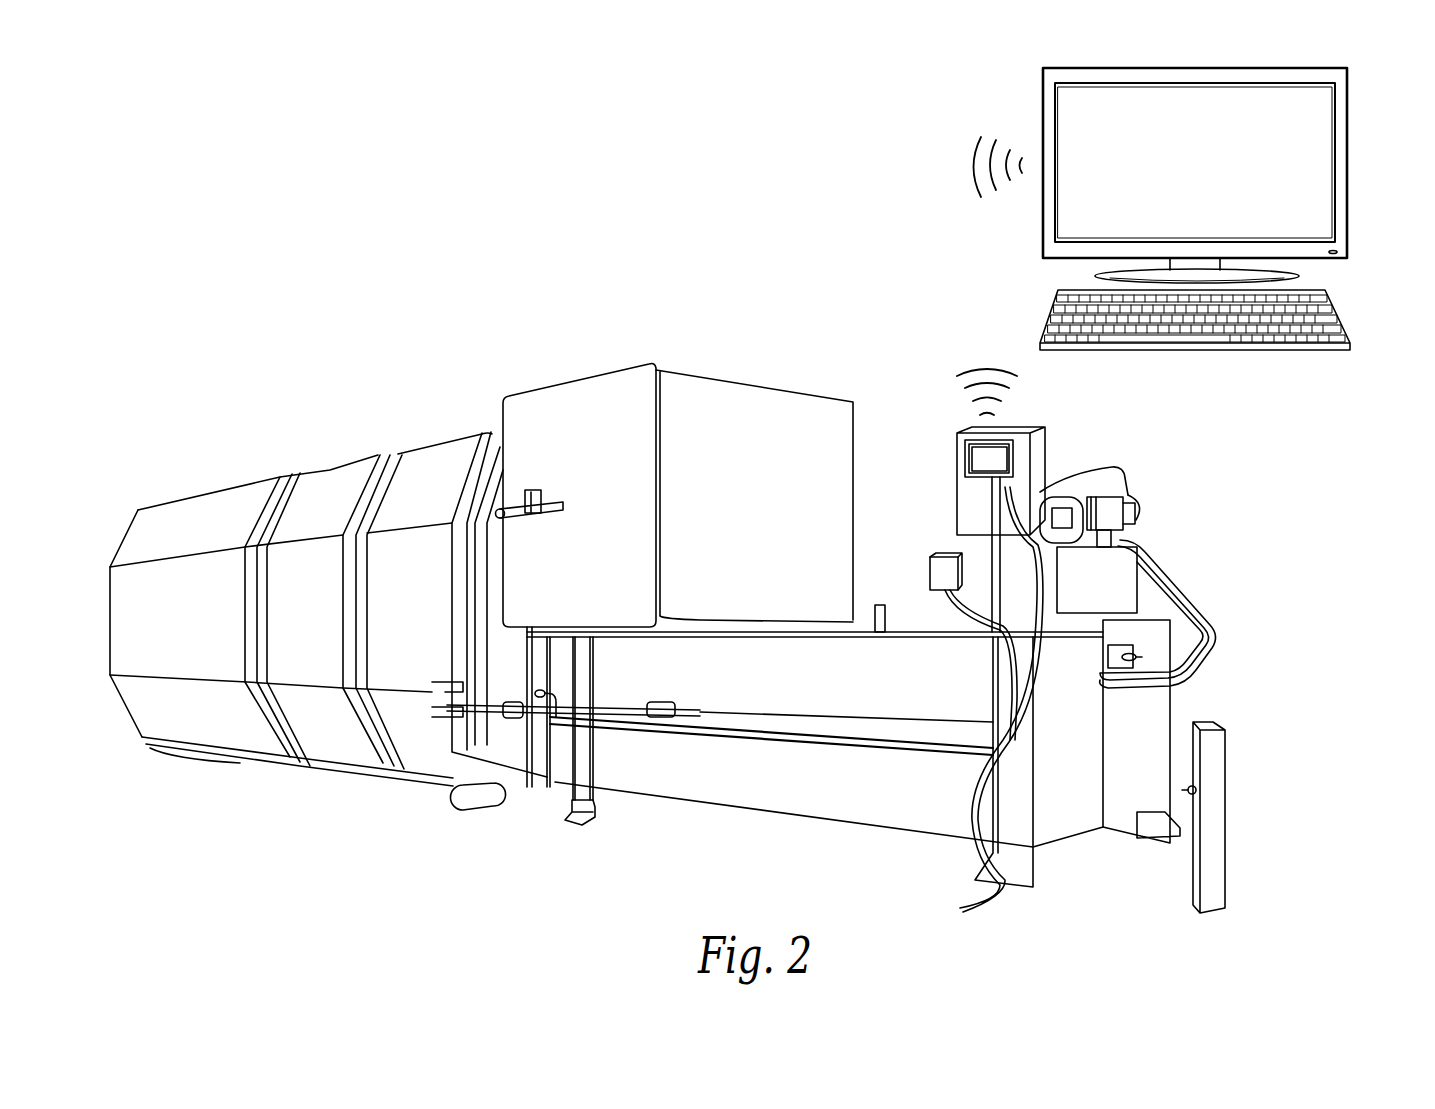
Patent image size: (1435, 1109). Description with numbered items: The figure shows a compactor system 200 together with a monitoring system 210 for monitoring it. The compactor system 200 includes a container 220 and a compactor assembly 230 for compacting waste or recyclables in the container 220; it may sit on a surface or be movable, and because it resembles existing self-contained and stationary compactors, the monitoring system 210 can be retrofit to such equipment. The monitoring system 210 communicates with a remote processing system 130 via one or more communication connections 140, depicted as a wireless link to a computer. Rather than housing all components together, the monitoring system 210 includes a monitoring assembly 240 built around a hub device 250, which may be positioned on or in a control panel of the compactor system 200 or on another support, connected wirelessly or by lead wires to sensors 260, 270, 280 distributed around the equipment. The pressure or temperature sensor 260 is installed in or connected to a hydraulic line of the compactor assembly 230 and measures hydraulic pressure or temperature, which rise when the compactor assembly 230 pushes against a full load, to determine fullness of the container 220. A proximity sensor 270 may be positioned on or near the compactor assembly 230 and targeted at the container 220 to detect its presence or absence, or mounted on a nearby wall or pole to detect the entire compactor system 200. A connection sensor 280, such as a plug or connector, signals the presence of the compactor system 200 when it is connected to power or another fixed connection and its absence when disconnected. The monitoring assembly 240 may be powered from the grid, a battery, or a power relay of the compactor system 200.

The remote processing system 130 is at (1313, 171).
The communication connections 140 is at (950, 162).
The compactor system 200 is at (298, 337).
The monitoring system 210 is at (1350, 452).
The container 220 is at (200, 724).
The compactor assembly 230 is at (908, 563).
The monitoring assembly 240 is at (925, 435).
The hub device 250 is at (1013, 455).
The pressure or temperature sensor 260 is at (1130, 495).
The proximity sensor 270 is at (537, 700).
The connection sensor 280 is at (1130, 655).